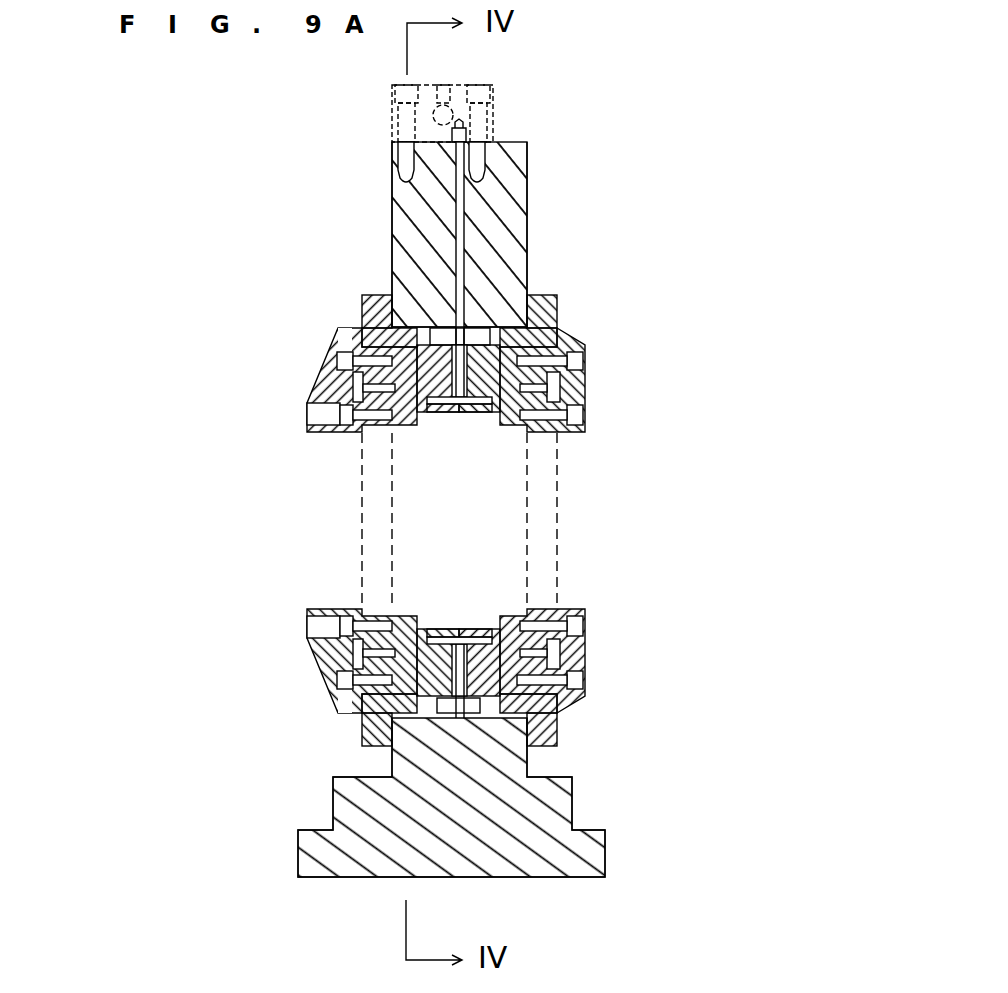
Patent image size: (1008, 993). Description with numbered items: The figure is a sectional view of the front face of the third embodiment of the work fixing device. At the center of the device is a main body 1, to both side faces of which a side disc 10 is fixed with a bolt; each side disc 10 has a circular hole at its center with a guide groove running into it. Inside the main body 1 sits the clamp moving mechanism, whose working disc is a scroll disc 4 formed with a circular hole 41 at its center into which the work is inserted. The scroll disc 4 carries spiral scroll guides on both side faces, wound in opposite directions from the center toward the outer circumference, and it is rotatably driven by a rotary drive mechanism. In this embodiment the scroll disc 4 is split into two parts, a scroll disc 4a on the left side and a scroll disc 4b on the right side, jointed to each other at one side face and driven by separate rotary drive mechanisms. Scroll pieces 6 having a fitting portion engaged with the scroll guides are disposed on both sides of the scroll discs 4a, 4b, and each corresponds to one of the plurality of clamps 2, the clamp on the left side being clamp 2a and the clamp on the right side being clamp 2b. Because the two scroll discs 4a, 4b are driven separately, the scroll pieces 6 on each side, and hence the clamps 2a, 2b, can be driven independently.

The main body 1 is at (550, 250).
The clamps 2 is at (461, 509).
The clamp 2a is at (332, 390).
The clamp 2b is at (587, 385).
The scroll disc 4 is at (446, 509).
The scroll disc 4a is at (438, 340).
The scroll disc 4b is at (478, 335).
The scroll pieces 6 is at (373, 328).
The side disc 10 is at (363, 720).
The circular hole 41 is at (463, 414).